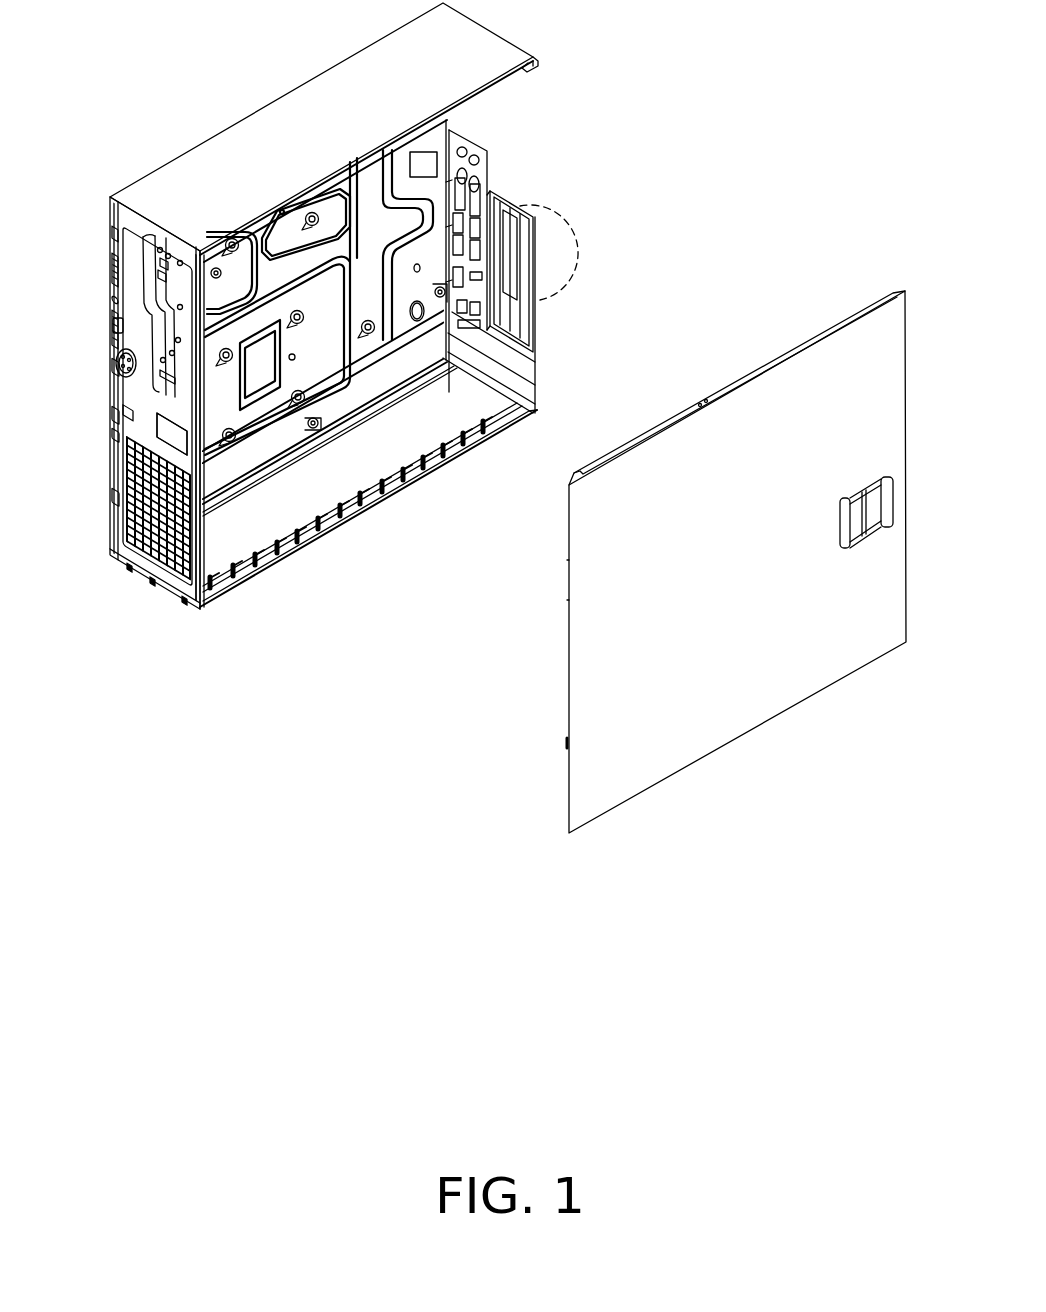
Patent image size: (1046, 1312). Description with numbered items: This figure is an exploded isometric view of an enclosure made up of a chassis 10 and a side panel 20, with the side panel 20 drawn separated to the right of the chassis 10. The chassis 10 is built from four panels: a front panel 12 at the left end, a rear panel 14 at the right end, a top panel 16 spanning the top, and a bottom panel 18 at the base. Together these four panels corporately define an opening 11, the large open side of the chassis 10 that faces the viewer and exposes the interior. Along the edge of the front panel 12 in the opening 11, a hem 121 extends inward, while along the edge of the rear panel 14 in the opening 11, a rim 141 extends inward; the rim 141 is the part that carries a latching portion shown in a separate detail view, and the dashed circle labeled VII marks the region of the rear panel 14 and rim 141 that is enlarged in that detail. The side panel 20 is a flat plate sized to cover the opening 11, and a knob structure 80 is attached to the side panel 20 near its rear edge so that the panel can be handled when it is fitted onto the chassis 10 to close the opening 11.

The chassis 10 is at (508, 437).
The top panel 16 is at (217, 163).
The front panel 12 is at (118, 527).
The hem 121 is at (203, 542).
The rear panel 14 is at (478, 237).
The rim 141 is at (528, 314).
The opening 11 is at (427, 428).
The bottom panel 18 is at (280, 516).
The side panel 20 is at (764, 581).
The knob structure 80 is at (862, 513).
The detail view circle VII is at (574, 228).